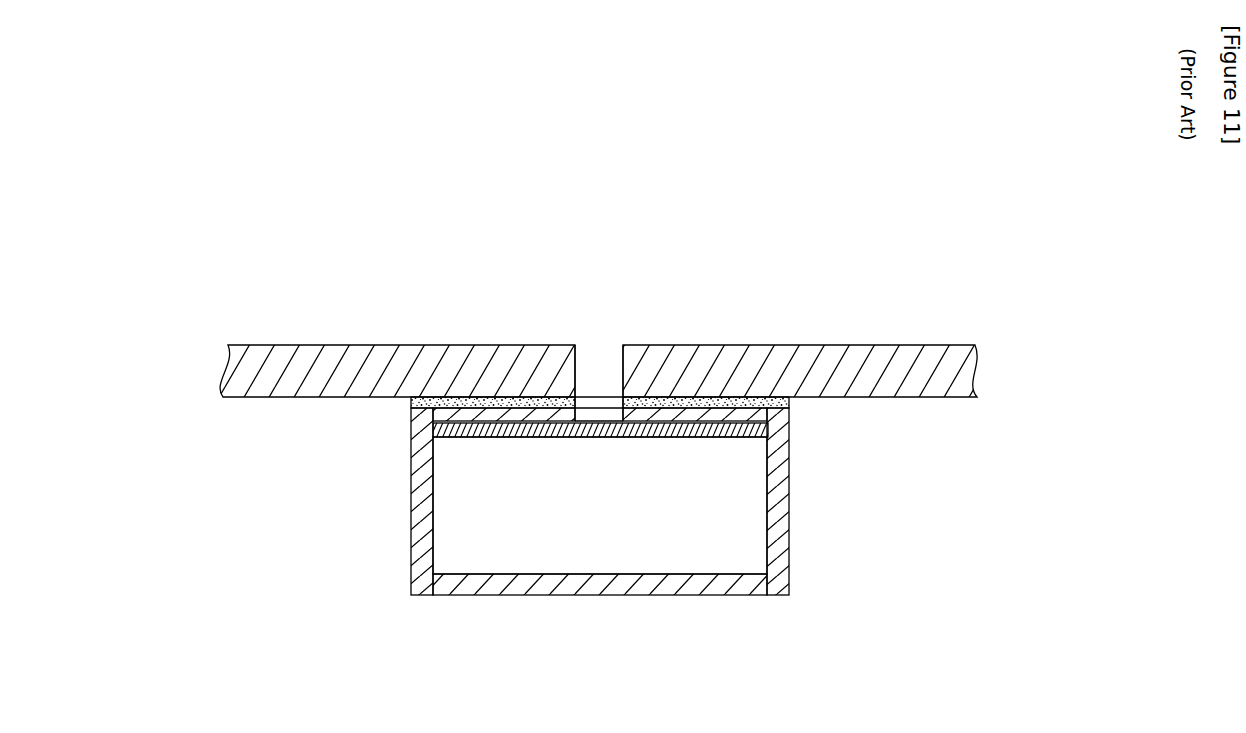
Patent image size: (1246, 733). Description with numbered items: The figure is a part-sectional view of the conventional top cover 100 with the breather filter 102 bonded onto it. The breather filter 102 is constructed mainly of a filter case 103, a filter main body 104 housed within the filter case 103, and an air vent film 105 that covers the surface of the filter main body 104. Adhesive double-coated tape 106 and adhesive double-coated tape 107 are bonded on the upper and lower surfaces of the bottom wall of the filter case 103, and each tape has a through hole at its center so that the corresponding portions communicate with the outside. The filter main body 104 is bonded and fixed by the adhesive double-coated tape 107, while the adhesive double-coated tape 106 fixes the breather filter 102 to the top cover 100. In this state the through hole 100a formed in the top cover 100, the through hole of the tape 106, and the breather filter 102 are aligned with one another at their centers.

The top cover 100 is at (928, 345).
The through hole 100a is at (620, 355).
The breather filter 102 is at (599, 465).
The filter case 103 is at (412, 458).
The filter main body 104 is at (485, 500).
The air vent film 105 is at (558, 578).
The adhesive double-coated tape 106 is at (458, 418).
The adhesive double-coated tape 107 is at (708, 413).